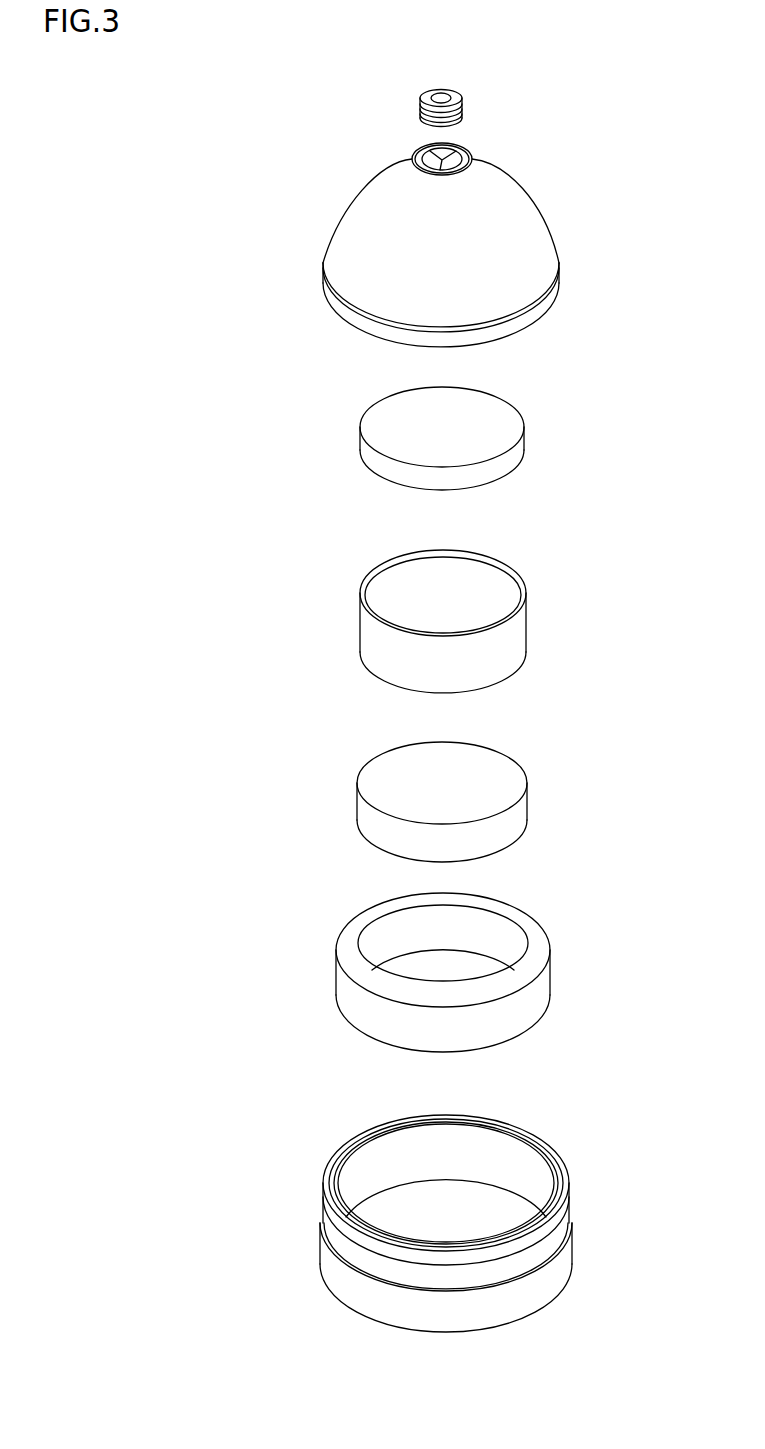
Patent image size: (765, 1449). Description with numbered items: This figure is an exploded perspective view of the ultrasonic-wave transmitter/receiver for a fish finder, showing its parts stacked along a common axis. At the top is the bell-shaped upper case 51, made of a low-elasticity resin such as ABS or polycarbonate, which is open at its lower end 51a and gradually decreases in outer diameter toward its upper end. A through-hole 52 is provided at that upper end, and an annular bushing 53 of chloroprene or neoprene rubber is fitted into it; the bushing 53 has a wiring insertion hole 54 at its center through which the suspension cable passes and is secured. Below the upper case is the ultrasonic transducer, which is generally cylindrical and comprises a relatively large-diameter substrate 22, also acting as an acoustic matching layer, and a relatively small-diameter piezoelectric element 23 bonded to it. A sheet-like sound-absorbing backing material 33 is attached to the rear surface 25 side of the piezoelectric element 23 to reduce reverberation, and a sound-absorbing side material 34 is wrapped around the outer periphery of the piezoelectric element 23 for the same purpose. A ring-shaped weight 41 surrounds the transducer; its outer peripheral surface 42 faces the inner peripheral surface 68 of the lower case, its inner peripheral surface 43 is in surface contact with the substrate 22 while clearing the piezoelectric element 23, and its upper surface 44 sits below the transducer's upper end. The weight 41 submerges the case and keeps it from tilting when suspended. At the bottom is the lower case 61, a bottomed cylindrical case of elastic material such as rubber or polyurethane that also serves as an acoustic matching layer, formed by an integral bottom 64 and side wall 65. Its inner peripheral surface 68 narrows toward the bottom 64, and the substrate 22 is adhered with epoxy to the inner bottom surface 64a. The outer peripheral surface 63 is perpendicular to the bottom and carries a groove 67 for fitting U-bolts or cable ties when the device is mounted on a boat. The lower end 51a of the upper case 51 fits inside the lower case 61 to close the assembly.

The substrate 22 is at (513, 755).
The piezoelectric element 23 is at (484, 599).
The rear surface 25 is at (387, 577).
The sound-absorbing material (backing material) 33 is at (503, 397).
The sound-absorbing material (side material) 34 is at (497, 670).
The weight 41 is at (457, 957).
The outer peripheral surface 42 is at (342, 1007).
The inner peripheral surface 43 is at (492, 930).
The upper surface 44 is at (353, 930).
The upper case 51 is at (485, 236).
The lower end 51a is at (557, 293).
The through-hole 52 is at (452, 158).
The bushing 53 is at (457, 93).
The wiring insertion hole 54 is at (440, 98).
The lower case 61 is at (494, 1218).
The outer peripheral surface 63 is at (545, 1297).
The bottom 64 is at (458, 1170).
The inner bottom surface 64a is at (473, 1197).
The side wall 65 is at (363, 1180).
The groove 67 is at (367, 1263).
The inner peripheral surface 68 is at (418, 1157).